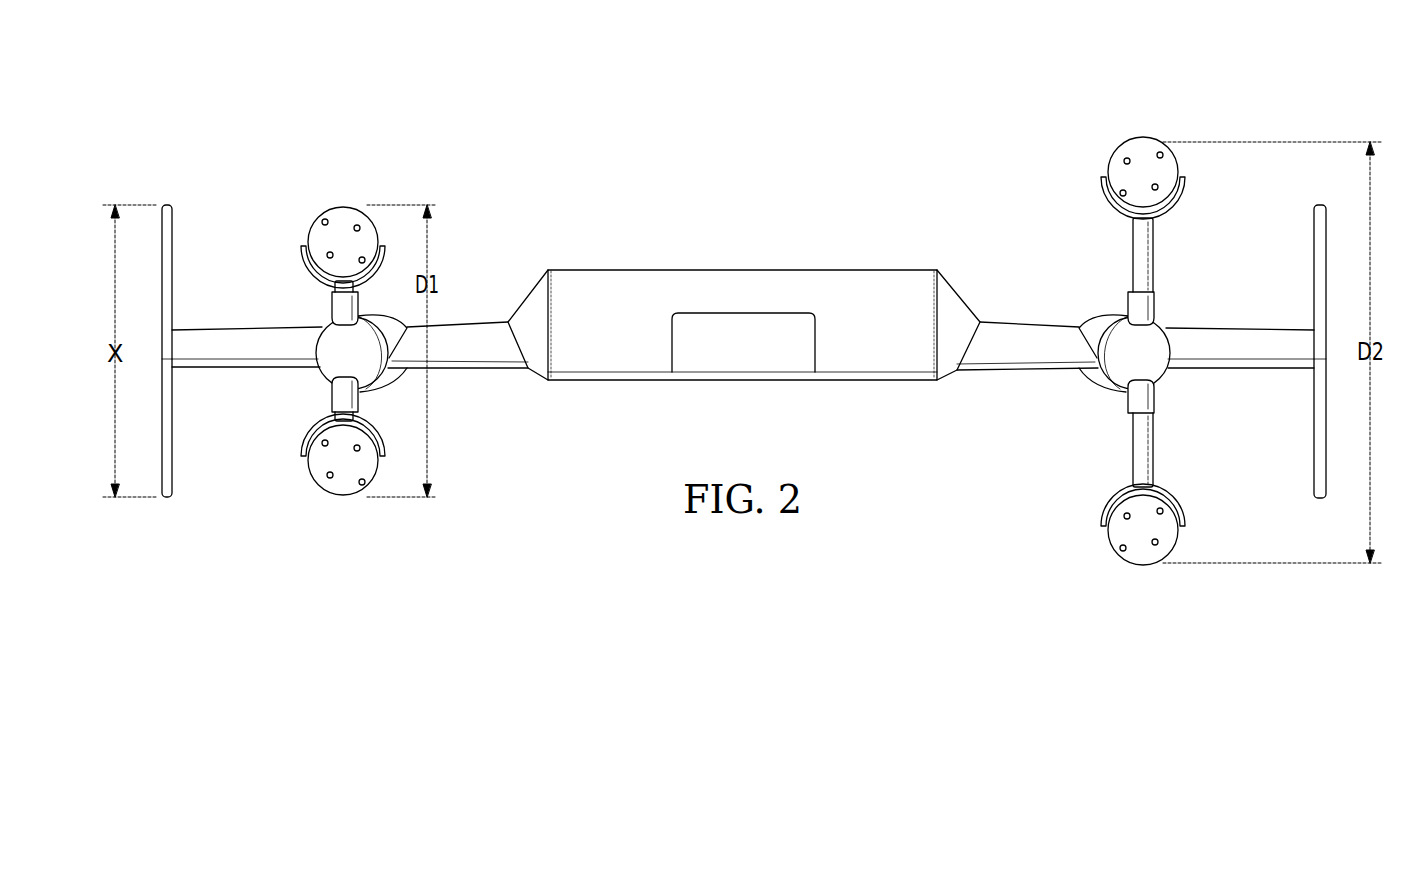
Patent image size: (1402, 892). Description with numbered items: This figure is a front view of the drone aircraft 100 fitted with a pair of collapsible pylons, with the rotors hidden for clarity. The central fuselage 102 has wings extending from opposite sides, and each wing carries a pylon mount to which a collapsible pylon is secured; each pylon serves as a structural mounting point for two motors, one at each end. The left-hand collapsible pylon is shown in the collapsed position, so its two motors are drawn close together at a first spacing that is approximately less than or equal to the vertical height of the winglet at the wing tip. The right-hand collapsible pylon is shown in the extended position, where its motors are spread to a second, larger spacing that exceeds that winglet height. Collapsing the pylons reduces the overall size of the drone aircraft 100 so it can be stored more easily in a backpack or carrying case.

The drone aircraft 100 is at (505, 82).
The fuselage 102 is at (622, 381).